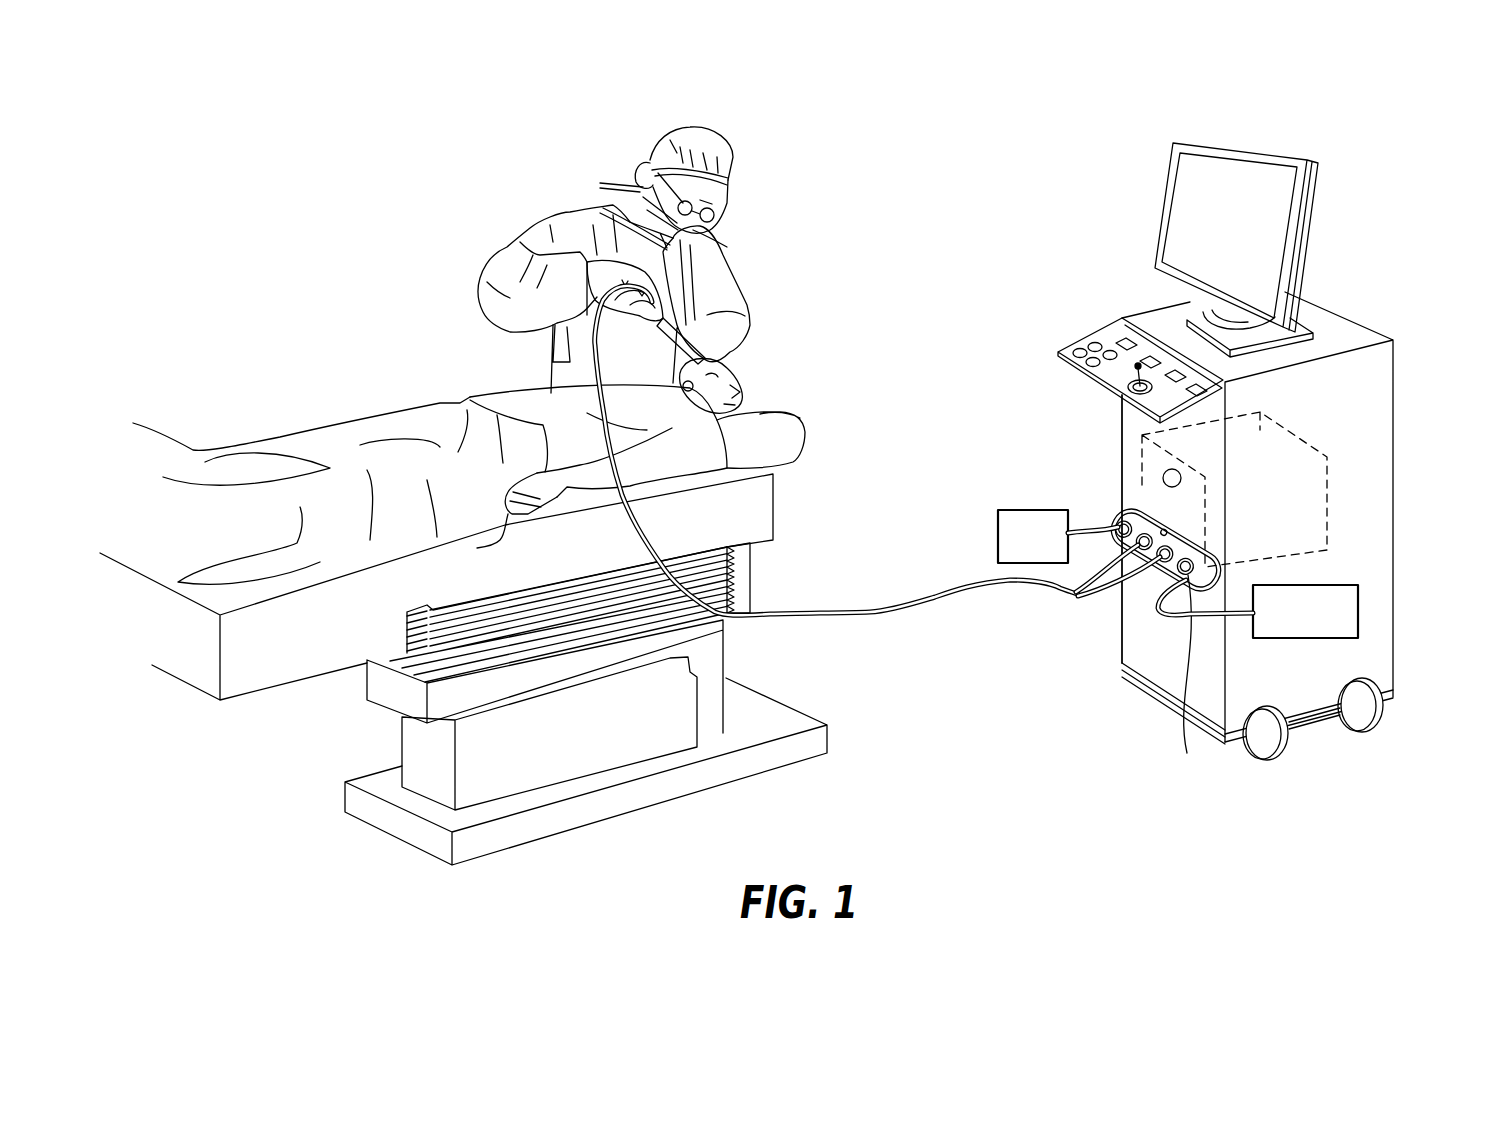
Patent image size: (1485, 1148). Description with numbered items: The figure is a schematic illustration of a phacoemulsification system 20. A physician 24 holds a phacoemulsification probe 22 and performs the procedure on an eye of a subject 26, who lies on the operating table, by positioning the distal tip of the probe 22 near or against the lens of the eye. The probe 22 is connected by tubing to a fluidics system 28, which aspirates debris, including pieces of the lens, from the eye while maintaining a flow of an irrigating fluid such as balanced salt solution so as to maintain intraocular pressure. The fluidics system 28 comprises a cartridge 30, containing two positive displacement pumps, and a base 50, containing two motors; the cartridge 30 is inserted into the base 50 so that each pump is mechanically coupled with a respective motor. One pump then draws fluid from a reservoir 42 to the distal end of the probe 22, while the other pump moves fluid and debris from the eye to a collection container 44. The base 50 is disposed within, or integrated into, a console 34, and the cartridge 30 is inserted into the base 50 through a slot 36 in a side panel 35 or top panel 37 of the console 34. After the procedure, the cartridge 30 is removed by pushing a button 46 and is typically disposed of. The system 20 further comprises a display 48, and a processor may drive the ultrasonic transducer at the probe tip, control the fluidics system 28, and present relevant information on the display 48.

The phacoemulsification system 20 is at (1273, 142).
The phacoemulsification probe 22 is at (654, 340).
The physician 24 is at (733, 155).
The subject 26 is at (717, 443).
The fluidics system 28 is at (1336, 526).
The cartridge 30 is at (1189, 679).
The console 34 is at (1360, 336).
The side panel 35 is at (1133, 415).
The slot 36 is at (1118, 492).
The top panel 37 is at (1147, 321).
The reservoir 42 is at (997, 533).
The collection container 44 is at (1360, 610).
The button 46 is at (1163, 475).
The display 48 is at (1316, 189).
The base 50 is at (1318, 443).